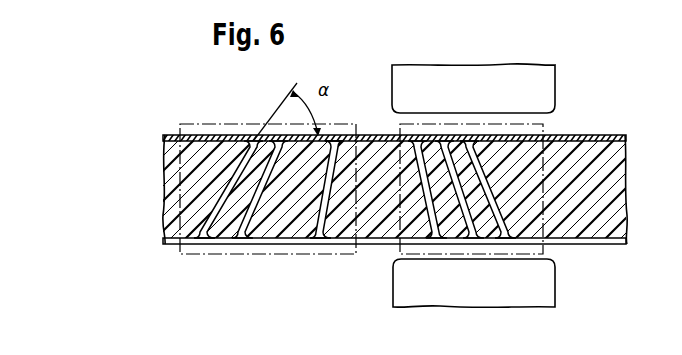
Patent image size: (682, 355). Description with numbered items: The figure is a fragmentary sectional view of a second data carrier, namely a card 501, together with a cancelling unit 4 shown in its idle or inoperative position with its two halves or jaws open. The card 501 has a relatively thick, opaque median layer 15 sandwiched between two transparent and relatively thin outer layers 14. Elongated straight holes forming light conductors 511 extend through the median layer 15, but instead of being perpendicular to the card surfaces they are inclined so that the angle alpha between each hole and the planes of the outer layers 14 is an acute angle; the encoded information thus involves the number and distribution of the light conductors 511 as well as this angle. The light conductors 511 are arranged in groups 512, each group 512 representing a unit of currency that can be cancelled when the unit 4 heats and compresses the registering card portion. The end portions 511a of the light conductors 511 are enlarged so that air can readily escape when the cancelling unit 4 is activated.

The cancelling unit 4 is at (546, 77).
The outer layers 14 is at (616, 136).
The median layer 15 is at (610, 182).
The card 501 is at (341, 177).
The light conductors 511 is at (495, 140).
The end portions 511a is at (354, 140).
The group 512 is at (185, 121).